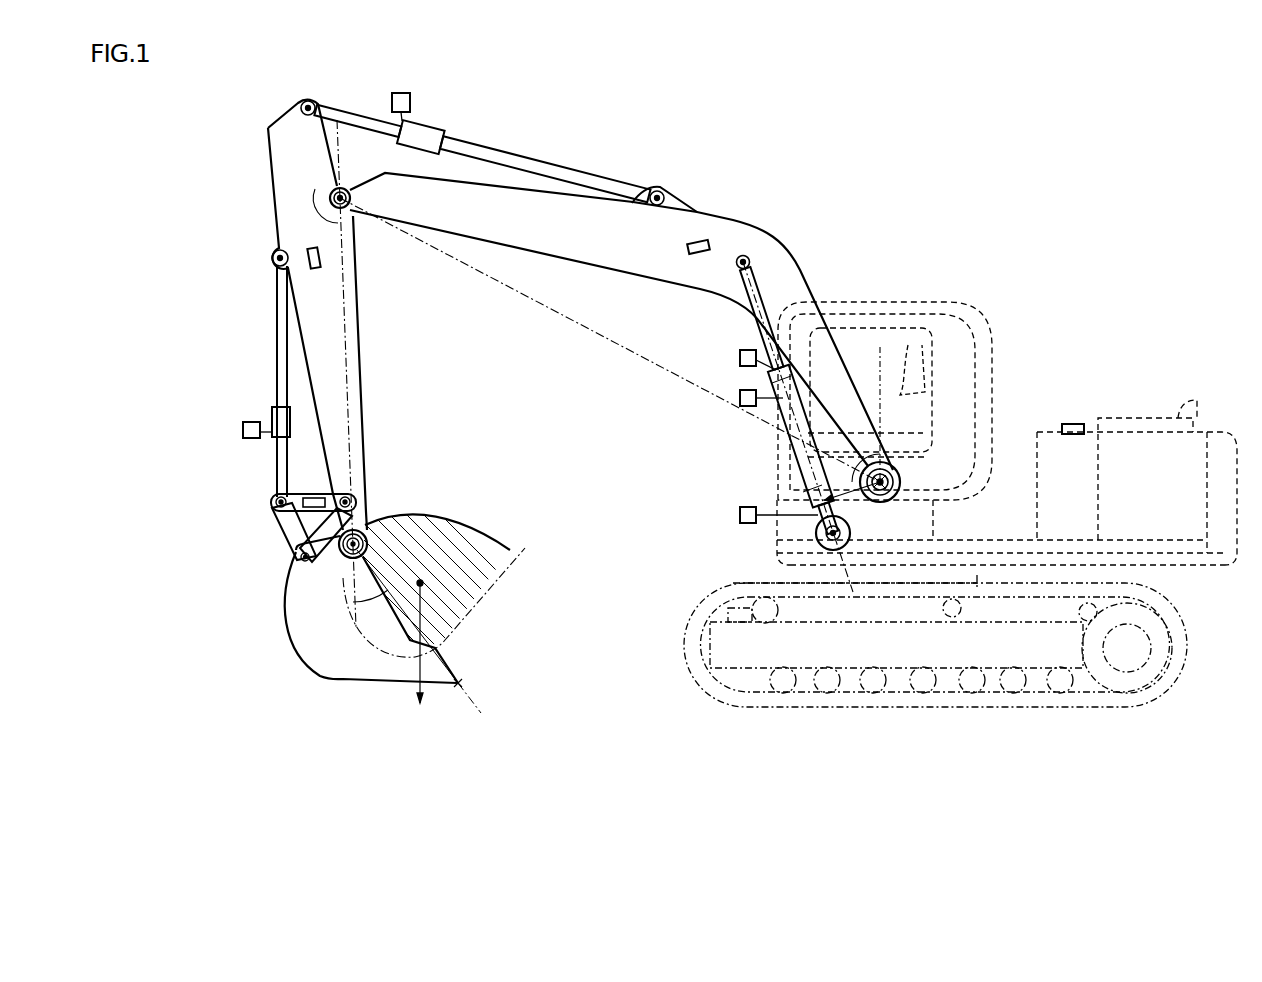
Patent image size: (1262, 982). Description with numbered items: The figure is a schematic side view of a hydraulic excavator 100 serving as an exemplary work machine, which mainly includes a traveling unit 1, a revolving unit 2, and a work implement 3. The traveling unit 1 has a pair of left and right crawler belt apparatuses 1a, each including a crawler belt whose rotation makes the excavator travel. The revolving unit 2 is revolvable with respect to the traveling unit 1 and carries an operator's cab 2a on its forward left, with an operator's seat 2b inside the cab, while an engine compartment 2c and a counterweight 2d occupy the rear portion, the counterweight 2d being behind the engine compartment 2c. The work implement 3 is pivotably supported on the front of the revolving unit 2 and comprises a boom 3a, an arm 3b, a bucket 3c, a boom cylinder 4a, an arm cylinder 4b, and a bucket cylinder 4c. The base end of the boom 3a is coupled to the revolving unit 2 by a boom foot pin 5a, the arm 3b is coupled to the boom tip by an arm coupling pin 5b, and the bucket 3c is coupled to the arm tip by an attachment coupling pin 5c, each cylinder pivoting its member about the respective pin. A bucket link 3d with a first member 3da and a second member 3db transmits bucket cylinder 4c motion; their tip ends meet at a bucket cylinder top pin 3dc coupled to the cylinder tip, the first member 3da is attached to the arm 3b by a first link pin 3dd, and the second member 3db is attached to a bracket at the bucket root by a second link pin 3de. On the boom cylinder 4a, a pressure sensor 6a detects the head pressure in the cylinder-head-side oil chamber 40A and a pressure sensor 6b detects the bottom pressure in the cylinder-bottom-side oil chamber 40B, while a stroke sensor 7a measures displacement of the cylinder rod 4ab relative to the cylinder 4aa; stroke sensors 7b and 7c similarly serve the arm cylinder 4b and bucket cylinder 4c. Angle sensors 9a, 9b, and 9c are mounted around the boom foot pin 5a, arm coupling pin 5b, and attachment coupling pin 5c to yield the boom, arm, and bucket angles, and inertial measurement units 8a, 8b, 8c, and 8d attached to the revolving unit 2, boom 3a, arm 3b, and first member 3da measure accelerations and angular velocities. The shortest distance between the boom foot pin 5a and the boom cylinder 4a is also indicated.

The hydraulic excavator 100 is at (1018, 188).
The traveling unit 1 is at (924, 712).
The crawler belt apparatus 1a is at (1040, 706).
The revolving unit 2 is at (1133, 388).
The operator's cab 2a is at (952, 300).
The operator's seat 2b is at (905, 392).
The engine compartment 2c is at (1145, 450).
The counterweight 2d is at (1223, 452).
The work implement 3 is at (672, 165).
The boom 3a is at (748, 233).
The arm 3b is at (290, 190).
The bucket 3c is at (338, 670).
The bucket link 3d is at (210, 530).
The first member 3da is at (290, 529).
The second member 3db is at (300, 545).
The bucket cylinder top pin 3dc is at (272, 501).
The first link pin 3dd is at (360, 500).
The second link pin 3de is at (298, 558).
The boom cylinder 4a is at (793, 457).
The cylinder 4aa is at (827, 513).
The cylinder rod 4ab is at (745, 280).
The arm cylinder 4b is at (545, 168).
The bucket cylinder 4c is at (280, 328).
The boom foot pin 5a is at (897, 478).
The arm coupling pin 5b is at (342, 189).
The attachment coupling pin 5c is at (345, 560).
The pressure sensor 6a is at (750, 408).
The pressure sensor 6b is at (740, 515).
The stroke sensor 7a is at (740, 352).
The stroke sensor 7b is at (412, 103).
The stroke sensor 7c is at (250, 423).
The inertial measurement unit 8a is at (1075, 422).
The inertial measurement unit 8b is at (702, 238).
The inertial measurement unit 8c is at (310, 263).
The inertial measurement unit 8d is at (306, 496).
The angle sensor 9a is at (880, 482).
The angle sensor 9b is at (328, 188).
The angle sensor 9c is at (370, 517).
The cylinder-head-side oil chamber 40A is at (776, 372).
The cylinder-bottom-side oil chamber 40B is at (812, 482).